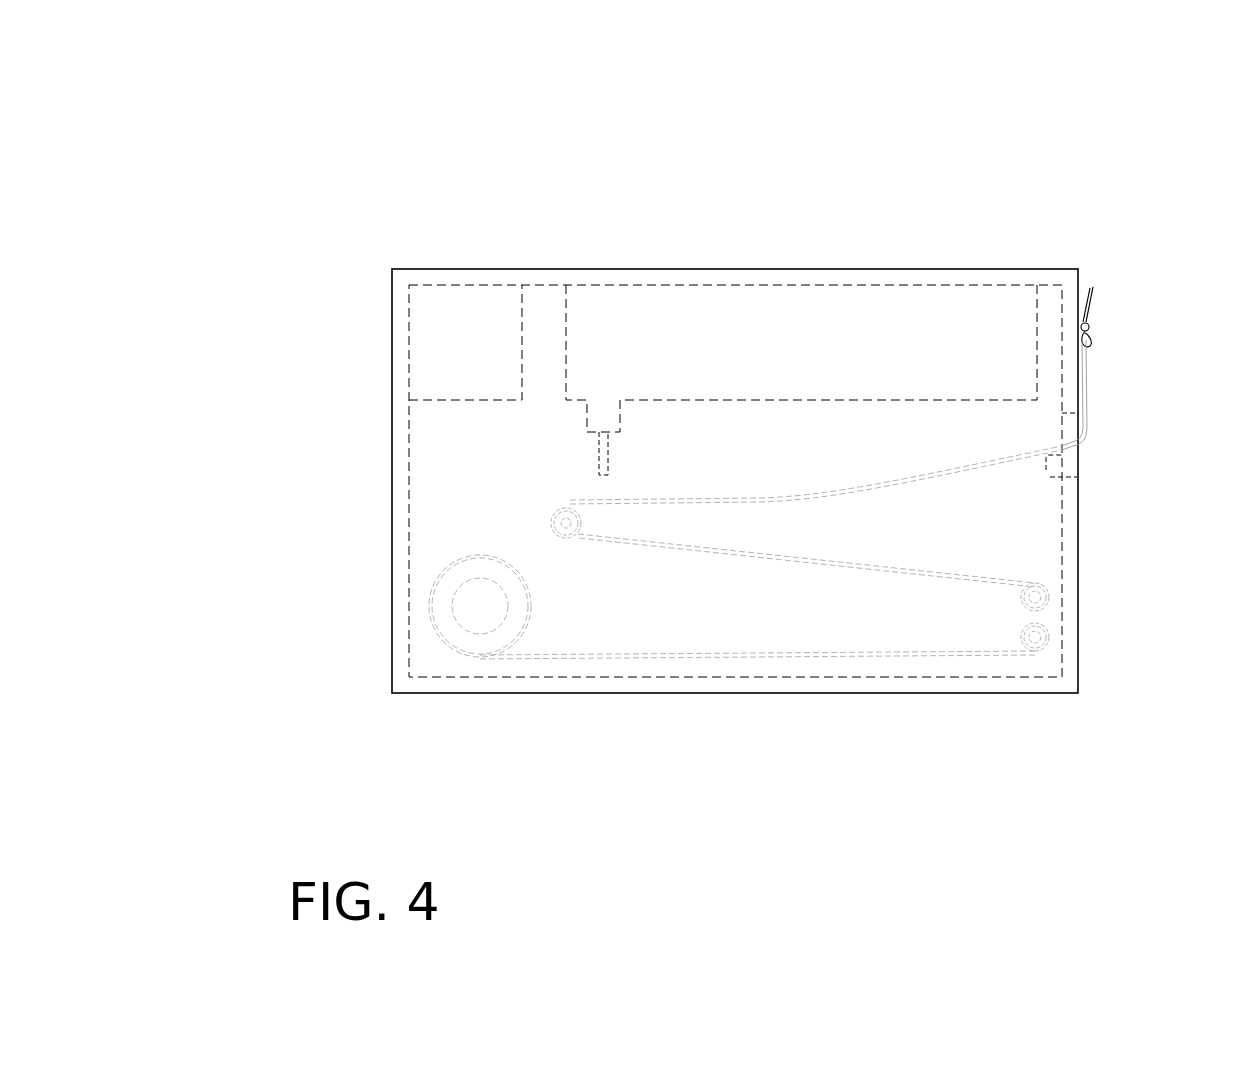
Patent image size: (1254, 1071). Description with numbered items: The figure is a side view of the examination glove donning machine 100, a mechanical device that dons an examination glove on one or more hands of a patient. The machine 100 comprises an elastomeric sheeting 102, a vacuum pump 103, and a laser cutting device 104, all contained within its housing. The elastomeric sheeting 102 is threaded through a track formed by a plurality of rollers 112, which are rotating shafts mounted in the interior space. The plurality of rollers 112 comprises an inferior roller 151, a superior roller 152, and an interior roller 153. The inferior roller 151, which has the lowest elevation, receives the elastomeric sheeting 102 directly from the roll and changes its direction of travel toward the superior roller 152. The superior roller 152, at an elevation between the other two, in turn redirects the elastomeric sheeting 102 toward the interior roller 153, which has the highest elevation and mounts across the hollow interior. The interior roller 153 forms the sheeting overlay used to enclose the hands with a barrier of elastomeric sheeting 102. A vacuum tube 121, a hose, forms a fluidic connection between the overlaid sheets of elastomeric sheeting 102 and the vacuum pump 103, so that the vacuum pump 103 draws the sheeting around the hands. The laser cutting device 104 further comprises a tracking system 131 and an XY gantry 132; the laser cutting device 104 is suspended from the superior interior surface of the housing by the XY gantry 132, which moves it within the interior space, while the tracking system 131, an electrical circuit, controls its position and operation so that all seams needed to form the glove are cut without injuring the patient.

The examination glove donning machine 100 is at (298, 208).
The elastomeric sheeting 102 is at (488, 612).
The vacuum pump 103 is at (1073, 463).
The laser cutting device 104 is at (606, 432).
The plurality of rollers 112 is at (1022, 633).
The vacuum tube 121 is at (1045, 465).
The tracking system 131 is at (467, 322).
The XY gantry 132 is at (988, 320).
The inferior roller 151 is at (1038, 632).
The superior roller 152 is at (1046, 594).
The interior roller 153 is at (566, 520).